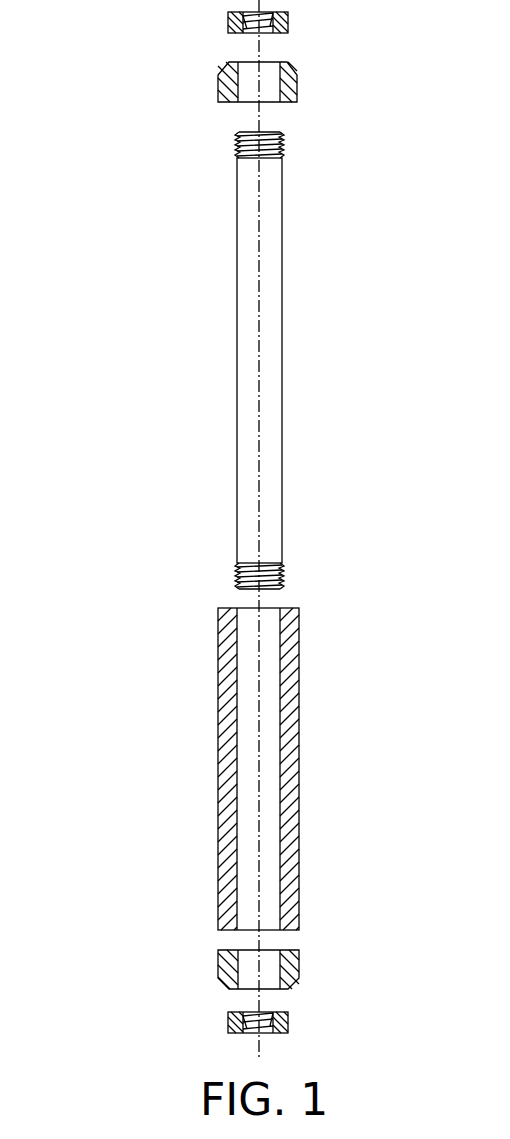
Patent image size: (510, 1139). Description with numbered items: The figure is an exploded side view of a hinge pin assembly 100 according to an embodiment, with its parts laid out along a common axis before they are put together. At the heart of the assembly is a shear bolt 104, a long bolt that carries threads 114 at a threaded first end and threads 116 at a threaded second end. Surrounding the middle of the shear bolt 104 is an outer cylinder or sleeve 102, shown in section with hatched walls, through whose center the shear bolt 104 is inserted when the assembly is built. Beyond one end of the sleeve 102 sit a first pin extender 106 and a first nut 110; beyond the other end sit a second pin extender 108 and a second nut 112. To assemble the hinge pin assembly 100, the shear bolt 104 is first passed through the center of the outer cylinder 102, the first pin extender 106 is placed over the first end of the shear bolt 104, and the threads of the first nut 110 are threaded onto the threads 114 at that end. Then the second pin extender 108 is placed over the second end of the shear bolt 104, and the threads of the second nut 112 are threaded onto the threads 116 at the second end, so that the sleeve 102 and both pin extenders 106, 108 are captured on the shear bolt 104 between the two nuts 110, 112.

The hinge pin assembly 100 is at (168, 88).
The outer cylinder or sleeve 102 is at (299, 769).
The shear bolt 104 is at (282, 373).
The first pin extender 106 is at (299, 960).
The second pin extender 108 is at (297, 86).
The first nut 110 is at (288, 1018).
The second nut 112 is at (288, 21).
The threads at threaded first end of the shear bolt 114 is at (282, 573).
The threads at threaded second end of the shear bolt 116 is at (282, 142).